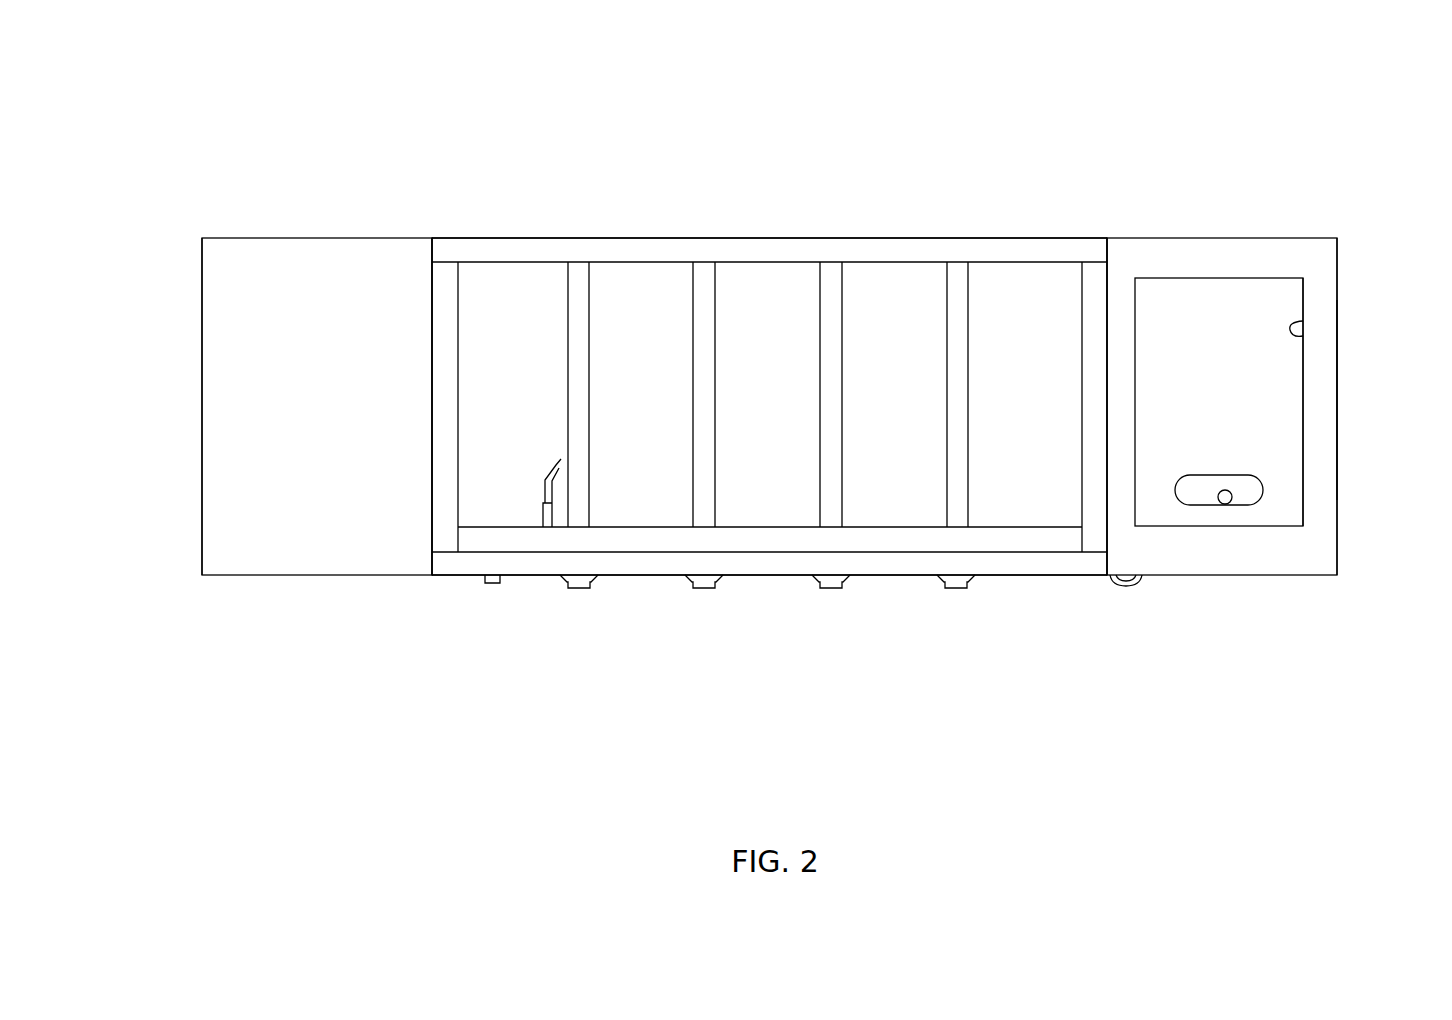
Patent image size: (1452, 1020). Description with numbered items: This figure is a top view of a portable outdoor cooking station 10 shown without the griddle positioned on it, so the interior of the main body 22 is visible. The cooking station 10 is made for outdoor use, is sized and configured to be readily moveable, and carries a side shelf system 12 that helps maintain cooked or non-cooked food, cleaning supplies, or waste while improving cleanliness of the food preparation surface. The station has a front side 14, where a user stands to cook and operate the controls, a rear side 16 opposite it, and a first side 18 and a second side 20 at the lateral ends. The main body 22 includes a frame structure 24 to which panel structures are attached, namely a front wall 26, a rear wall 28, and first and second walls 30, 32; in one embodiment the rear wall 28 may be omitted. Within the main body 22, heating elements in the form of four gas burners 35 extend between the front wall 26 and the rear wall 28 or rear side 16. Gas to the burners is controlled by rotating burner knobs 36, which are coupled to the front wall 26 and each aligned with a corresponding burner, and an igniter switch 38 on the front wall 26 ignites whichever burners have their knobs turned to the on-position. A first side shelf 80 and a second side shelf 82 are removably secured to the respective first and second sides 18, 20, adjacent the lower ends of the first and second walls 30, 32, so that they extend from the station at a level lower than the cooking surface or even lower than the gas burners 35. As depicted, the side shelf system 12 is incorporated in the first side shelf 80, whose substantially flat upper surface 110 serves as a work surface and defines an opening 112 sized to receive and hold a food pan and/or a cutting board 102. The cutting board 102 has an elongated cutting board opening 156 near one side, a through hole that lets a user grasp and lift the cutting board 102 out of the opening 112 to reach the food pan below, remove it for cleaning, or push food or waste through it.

The portable outdoor cooking station 10 is at (1222, 75).
The side shelf system 12 is at (1262, 203).
The front side 14 is at (750, 645).
The rear side 16 is at (774, 198).
The first side 18 is at (1350, 370).
The second side 20 is at (160, 432).
The main body 22 is at (1030, 580).
The frame structure 24 is at (525, 268).
The front wall 26 is at (893, 578).
The rear wall 28 is at (887, 237).
The first wall 30 is at (1108, 279).
The second wall 32 is at (432, 283).
The gas burners 35 is at (596, 380).
The burner knobs 36 is at (594, 583).
The igniter switch 38 is at (492, 583).
The first side shelf 80 is at (1348, 283).
The second side shelf 82 is at (195, 297).
The cutting board 102 is at (1282, 434).
The upper surface 110 is at (1328, 476).
The opening 112 is at (1303, 321).
The cutting board opening 156 is at (1230, 504).